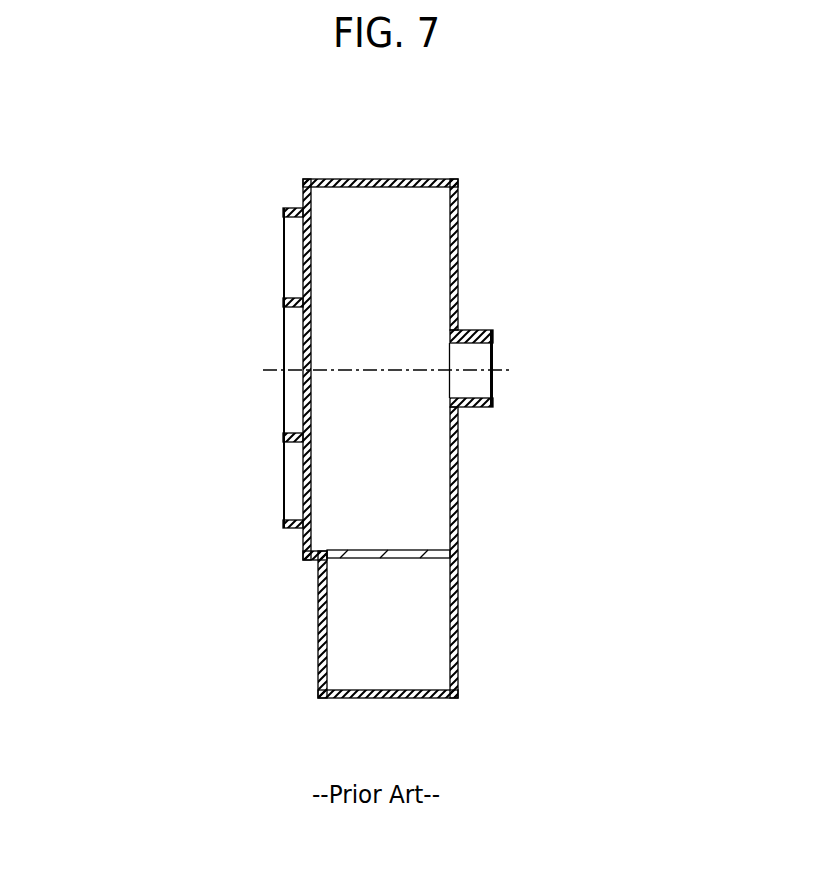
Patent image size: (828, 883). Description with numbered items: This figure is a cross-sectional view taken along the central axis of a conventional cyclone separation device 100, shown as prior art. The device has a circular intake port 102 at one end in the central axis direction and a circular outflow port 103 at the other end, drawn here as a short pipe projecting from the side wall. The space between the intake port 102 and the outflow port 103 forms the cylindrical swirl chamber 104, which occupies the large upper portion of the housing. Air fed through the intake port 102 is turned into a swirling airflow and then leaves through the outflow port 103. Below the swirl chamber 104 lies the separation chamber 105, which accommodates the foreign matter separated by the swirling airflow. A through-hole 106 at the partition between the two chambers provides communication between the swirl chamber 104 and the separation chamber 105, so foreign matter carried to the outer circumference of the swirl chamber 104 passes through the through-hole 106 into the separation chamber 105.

The cyclone separation device 100 is at (280, 97).
The intake port 102 is at (283, 263).
The outflow port 103 is at (485, 378).
The swirl chamber 104 is at (435, 453).
The separation chamber 105 is at (423, 655).
The through-hole 106 is at (415, 558).